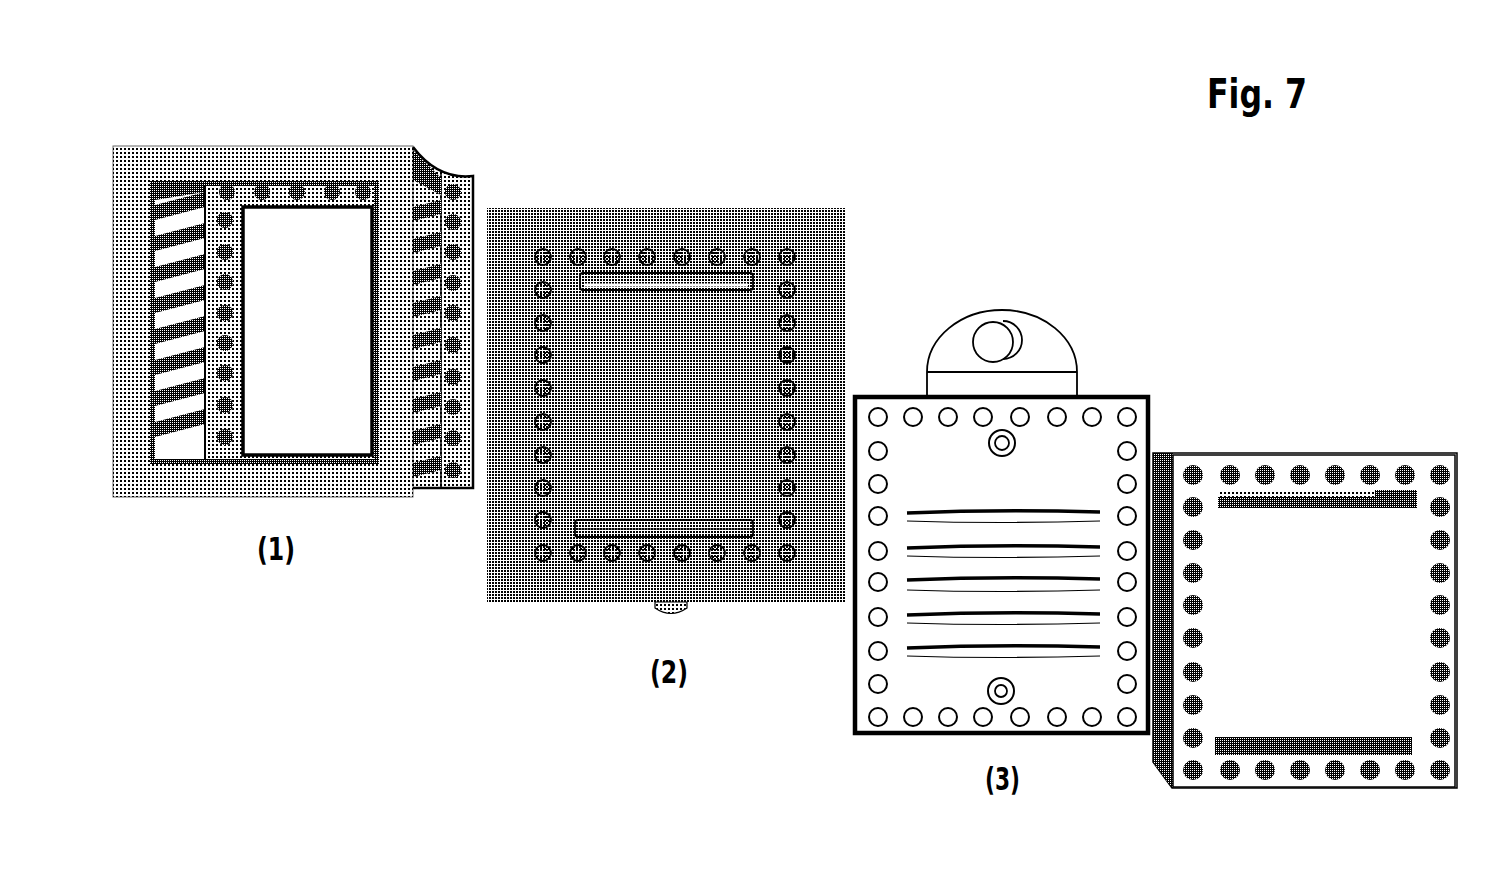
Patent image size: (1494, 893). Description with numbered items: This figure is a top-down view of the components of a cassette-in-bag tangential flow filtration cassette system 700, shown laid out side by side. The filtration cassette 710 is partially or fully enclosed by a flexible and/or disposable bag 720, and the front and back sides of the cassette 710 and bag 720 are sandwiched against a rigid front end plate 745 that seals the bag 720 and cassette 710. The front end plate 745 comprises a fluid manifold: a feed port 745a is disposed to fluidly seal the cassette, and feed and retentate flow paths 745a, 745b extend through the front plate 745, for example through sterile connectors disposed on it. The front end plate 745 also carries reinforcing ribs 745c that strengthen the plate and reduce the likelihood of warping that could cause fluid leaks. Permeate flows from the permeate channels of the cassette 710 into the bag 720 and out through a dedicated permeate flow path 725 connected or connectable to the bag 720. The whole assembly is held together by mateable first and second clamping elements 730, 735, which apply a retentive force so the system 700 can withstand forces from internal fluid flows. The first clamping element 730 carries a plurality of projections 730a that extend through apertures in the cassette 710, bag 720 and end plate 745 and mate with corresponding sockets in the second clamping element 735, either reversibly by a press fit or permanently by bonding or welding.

The tangential flow filtration cassette system 700 is at (513, 747).
The filtration cassette 710 is at (1305, 620).
The flexible and/or disposable bag 720 is at (666, 460).
The permeate flow path 725 is at (687, 615).
The first clamping element 730 is at (472, 172).
The projections 730a is at (213, 405).
The second clamping element 735 is at (275, 371).
The front end plate 745 is at (1027, 556).
The feed port 745a is at (1010, 440).
The retentate flow path 745b is at (990, 684).
The reinforcing ribs 745c is at (1045, 652).